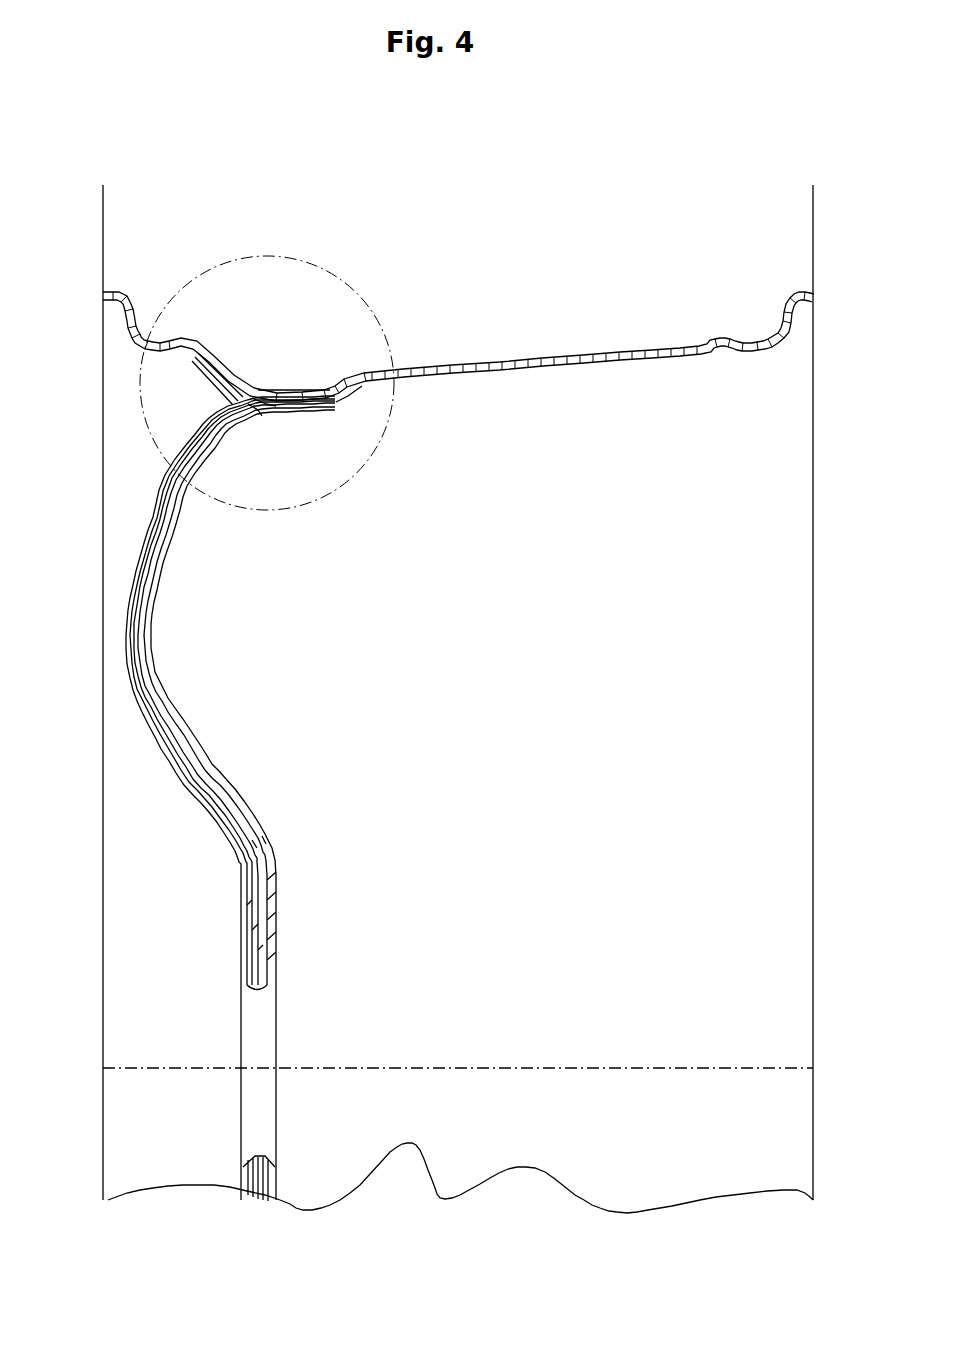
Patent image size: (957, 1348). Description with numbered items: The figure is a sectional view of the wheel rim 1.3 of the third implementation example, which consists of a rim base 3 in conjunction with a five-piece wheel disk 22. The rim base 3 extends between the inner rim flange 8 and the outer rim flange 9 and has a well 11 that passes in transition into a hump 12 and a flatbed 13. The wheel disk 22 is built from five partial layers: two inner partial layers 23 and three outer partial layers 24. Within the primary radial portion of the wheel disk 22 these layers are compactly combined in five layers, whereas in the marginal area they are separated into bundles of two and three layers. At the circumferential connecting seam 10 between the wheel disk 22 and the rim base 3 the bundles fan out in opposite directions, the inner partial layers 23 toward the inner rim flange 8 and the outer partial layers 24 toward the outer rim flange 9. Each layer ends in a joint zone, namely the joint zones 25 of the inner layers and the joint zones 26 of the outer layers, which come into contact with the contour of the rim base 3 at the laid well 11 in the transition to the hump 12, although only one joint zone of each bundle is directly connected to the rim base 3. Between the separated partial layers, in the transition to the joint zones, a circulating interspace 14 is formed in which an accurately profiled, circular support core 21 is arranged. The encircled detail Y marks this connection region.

The outer rim flange 9 is at (103, 677).
The inner rim flange 8 is at (812, 677).
The hump 12 is at (192, 340).
The circumferential connecting seam 10 is at (265, 352).
The well 11 is at (313, 378).
The rim base 3 is at (458, 278).
The flatbed 13 is at (638, 355).
The joint zone of inner partial layers 25 is at (342, 397).
The circulating interspace 14 is at (370, 484).
The support core 21 is at (262, 405).
The joint zone of outer partial layers 26 is at (217, 373).
The inner partial layers 23 is at (265, 828).
The wheel disk 22 is at (276, 857).
The outer partial layers 24 is at (245, 903).
The wheel rim 1.3 is at (380, 1197).
The detail region Y is at (331, 271).